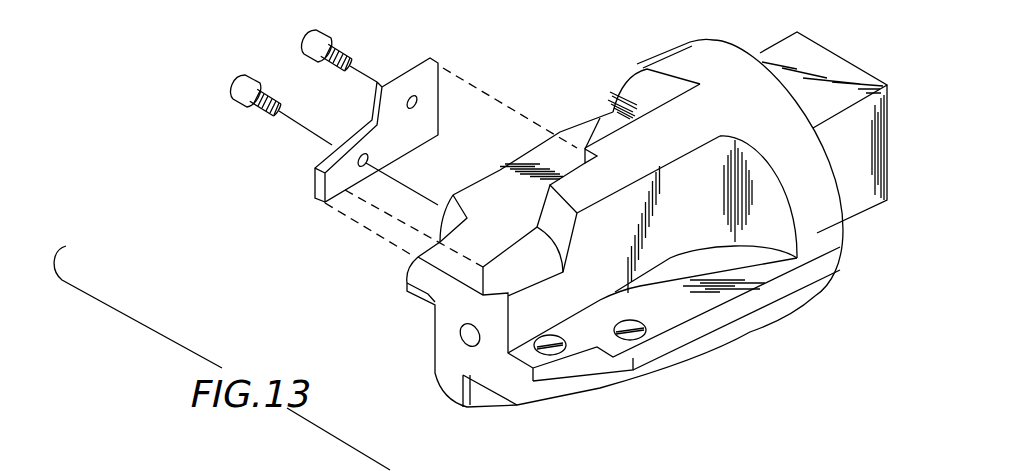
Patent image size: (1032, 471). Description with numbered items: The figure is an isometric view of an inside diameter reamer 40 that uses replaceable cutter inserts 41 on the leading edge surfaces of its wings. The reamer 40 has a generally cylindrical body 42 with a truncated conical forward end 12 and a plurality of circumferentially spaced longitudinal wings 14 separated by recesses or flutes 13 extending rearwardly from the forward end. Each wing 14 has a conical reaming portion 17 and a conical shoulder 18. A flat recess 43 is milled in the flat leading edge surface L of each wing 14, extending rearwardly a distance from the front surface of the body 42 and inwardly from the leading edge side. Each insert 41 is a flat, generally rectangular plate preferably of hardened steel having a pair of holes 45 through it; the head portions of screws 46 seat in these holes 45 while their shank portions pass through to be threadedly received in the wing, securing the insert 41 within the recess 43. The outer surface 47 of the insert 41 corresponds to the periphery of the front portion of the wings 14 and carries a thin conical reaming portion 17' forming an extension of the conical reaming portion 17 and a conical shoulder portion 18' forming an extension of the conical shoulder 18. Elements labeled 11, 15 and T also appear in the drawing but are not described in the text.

The guide body 11 is at (606, 224).
The truncated conical forward end 12 is at (445, 333).
The recesses or flutes 13 is at (622, 90).
The wings 14 is at (490, 170).
The boss 15 is at (830, 60).
The conical reaming portion 17 is at (475, 321).
The thin conical reaming portion 17' is at (303, 137).
The conical shoulder 18 is at (582, 297).
The conical shoulder portion 18' is at (378, 59).
The inside diameter reamer 40 is at (563, 62).
The replaceable cutter insert 41 is at (424, 60).
The generally cylindrical body 42 is at (715, 45).
The flat recess 43 is at (553, 165).
The holes 45 is at (412, 109).
The screws 46 is at (273, 87).
The outer surface 47 is at (570, 363).
The flat leading edge surfaces L is at (594, 117).
The T-slot T is at (600, 201).